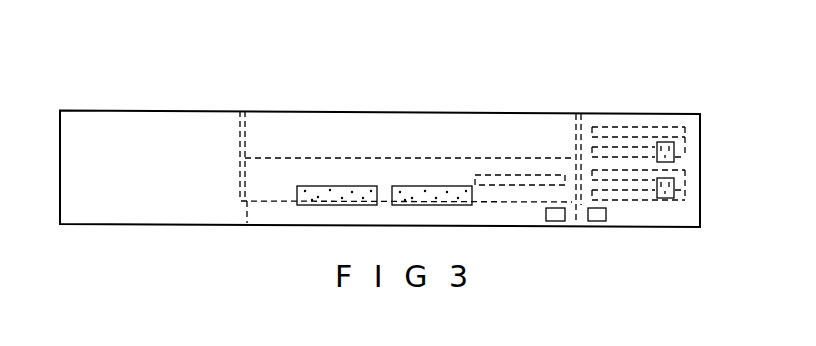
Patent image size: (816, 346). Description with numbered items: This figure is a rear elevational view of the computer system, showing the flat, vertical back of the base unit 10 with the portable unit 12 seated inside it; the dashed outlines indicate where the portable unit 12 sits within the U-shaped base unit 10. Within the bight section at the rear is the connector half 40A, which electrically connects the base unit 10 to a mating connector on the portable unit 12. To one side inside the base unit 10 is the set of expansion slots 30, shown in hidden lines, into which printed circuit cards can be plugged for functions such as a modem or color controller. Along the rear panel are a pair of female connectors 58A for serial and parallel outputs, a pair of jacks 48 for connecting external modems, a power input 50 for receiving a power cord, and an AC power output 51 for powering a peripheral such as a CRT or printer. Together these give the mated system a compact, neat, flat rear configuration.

The base unit 10 is at (142, 39).
The portable unit 12 is at (393, 133).
The connector half 40A is at (532, 177).
The expansion slots 30 is at (641, 154).
The power input 50 is at (674, 152).
The AC power output 51 is at (674, 186).
The female connectors 58A is at (400, 205).
The jacks 48 is at (596, 221).